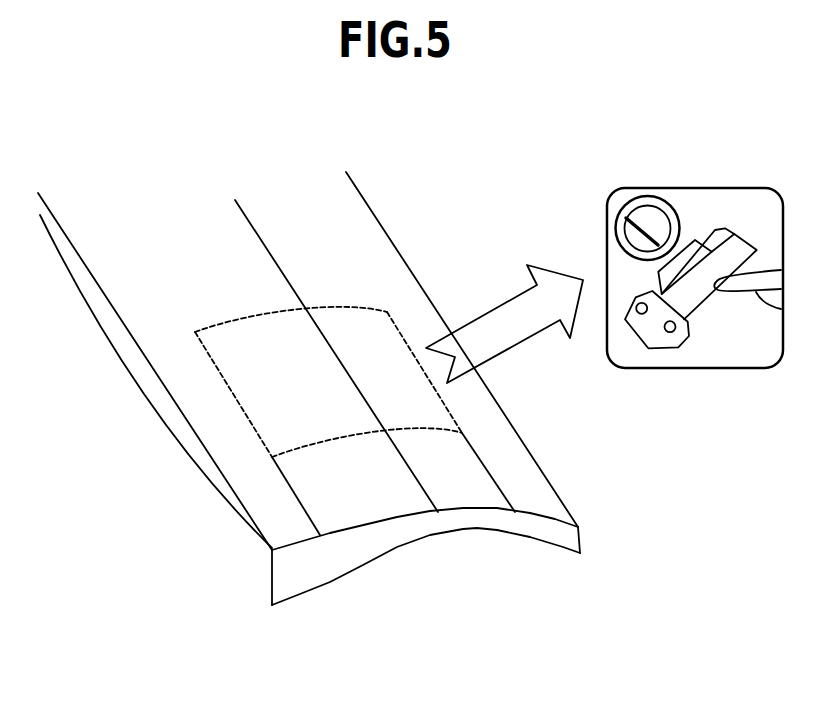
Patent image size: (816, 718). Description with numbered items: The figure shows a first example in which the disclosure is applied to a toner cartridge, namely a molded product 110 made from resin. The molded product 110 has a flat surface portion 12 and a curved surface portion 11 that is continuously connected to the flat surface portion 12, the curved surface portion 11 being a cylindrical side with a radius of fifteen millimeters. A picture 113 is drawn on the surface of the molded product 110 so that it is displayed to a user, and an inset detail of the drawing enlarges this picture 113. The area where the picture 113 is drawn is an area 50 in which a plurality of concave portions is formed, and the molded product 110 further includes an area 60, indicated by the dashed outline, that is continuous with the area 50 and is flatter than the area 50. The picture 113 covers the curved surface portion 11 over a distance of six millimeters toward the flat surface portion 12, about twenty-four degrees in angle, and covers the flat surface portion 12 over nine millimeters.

The curved surface portion 11 is at (350, 330).
The flat surface portion 12 is at (273, 407).
The area where a plurality of concave portions is formed 50 is at (749, 362).
The area flatter than the area 50 60 is at (212, 302).
The molded product 110 is at (265, 502).
The picture 113 is at (735, 217).